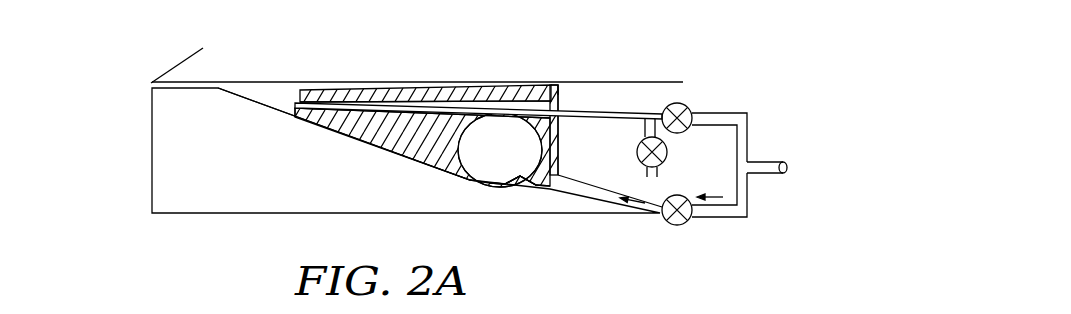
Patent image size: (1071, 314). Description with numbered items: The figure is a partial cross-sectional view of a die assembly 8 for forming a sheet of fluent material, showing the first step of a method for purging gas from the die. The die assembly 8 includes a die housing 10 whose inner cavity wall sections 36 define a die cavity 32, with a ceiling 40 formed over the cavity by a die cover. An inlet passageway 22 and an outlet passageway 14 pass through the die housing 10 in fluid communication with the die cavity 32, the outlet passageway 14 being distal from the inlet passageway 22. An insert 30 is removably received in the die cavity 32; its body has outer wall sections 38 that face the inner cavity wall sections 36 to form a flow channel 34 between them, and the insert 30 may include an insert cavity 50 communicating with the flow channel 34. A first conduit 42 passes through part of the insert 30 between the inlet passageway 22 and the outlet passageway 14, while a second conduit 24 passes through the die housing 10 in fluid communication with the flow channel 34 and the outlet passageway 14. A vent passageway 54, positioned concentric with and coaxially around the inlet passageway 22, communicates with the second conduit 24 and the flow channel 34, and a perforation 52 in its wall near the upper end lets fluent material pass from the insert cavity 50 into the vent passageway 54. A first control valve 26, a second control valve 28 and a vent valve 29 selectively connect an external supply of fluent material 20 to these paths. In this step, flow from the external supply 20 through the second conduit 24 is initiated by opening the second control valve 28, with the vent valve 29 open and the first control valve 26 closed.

The die assembly 8 is at (733, 39).
The die housing 10 is at (253, 173).
The outlet passageway 14 is at (150, 83).
The external supply of fluent material 20 is at (762, 162).
The inlet passageway 22 is at (637, 113).
The second conduit 24 is at (585, 189).
The first control valve 26 is at (668, 107).
The second control valve 28 is at (684, 196).
The vent valve 29 is at (667, 152).
The insert 30 is at (435, 141).
The die cavity 32 is at (290, 96).
The flow channel 34 is at (550, 80).
The inner cavity wall section 36 is at (562, 132).
The outer wall section 38 is at (425, 80).
The ceiling 40 is at (251, 81).
The first conduit 42 is at (368, 100).
The insert cavity 50 is at (472, 163).
The perforation 52 is at (480, 98).
The vent passageway 54 is at (652, 128).